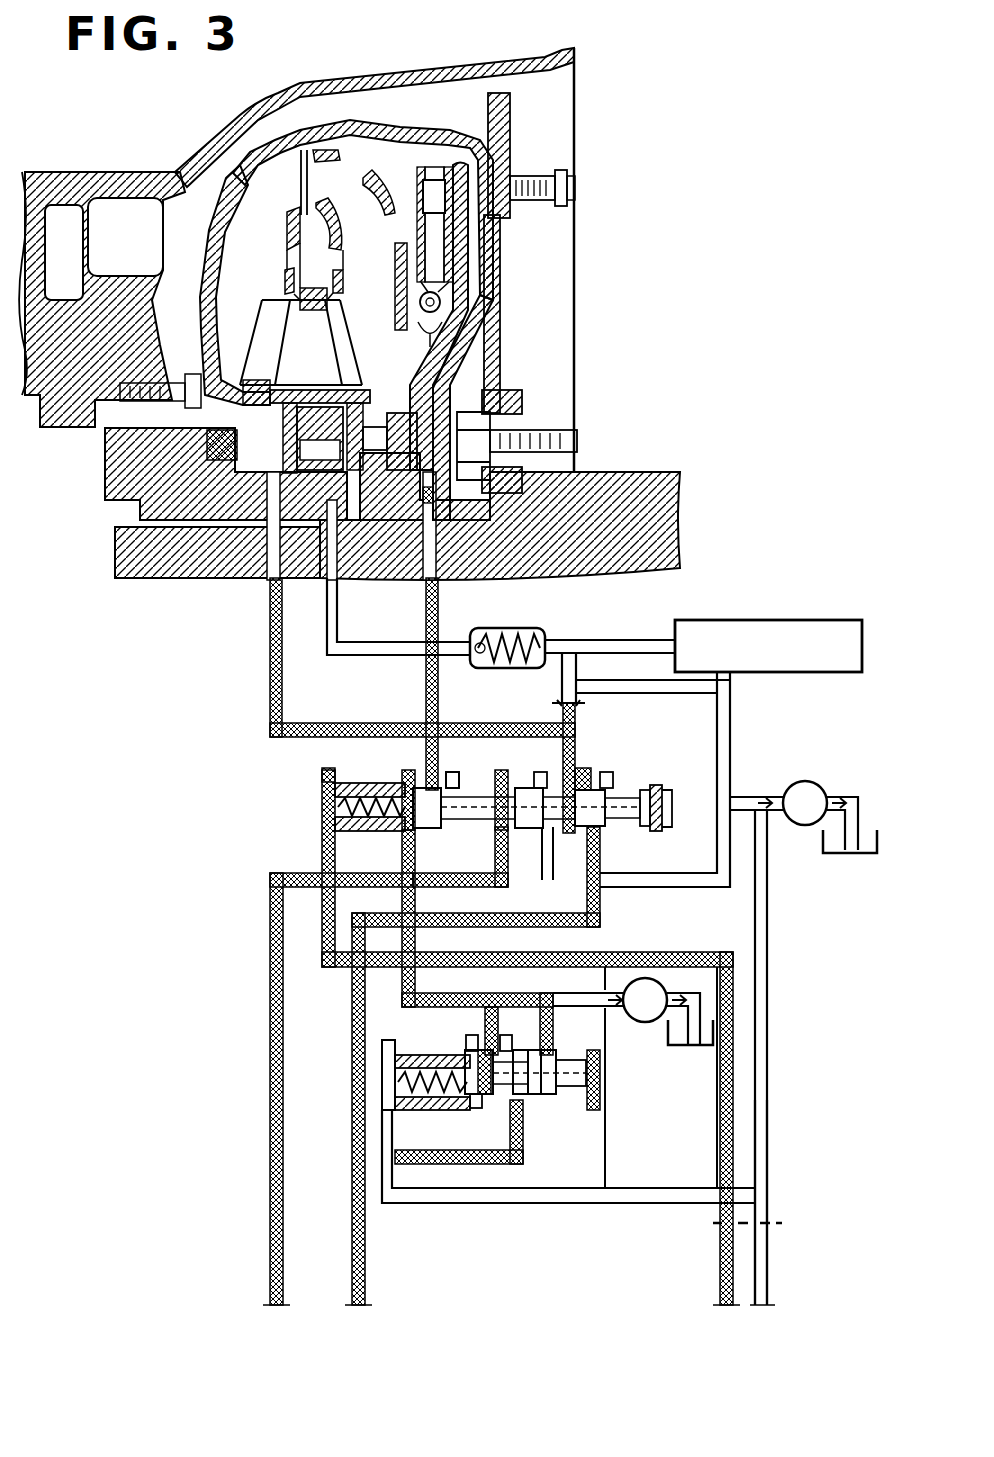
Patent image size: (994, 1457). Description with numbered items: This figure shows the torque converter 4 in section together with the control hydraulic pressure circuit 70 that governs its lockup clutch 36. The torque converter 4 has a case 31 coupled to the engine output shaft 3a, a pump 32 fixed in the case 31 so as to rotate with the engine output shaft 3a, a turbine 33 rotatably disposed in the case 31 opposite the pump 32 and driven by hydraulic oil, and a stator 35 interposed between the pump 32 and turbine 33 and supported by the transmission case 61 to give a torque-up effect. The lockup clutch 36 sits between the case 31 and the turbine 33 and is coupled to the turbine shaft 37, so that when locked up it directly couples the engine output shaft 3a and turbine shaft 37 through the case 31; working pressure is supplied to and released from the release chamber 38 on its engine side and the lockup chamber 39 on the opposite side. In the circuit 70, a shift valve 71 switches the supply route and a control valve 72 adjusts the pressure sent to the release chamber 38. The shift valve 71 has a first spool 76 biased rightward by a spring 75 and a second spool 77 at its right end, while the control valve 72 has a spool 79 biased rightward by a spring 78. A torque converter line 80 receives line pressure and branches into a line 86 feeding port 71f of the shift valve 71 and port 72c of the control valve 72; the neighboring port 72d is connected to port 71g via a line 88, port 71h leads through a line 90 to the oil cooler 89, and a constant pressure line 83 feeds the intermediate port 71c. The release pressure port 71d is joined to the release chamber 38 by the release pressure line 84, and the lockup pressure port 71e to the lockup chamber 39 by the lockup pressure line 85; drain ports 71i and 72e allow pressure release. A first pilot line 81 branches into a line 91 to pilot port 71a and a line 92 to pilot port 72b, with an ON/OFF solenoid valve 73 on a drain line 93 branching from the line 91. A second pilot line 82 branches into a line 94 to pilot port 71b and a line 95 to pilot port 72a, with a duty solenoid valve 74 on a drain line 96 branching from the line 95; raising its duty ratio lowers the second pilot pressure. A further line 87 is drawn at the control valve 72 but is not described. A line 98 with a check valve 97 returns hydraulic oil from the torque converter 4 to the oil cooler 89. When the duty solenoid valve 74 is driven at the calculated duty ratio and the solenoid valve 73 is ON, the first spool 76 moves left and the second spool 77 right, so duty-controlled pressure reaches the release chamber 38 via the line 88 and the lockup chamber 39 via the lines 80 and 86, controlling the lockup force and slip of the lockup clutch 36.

The engine output shaft 3a is at (640, 470).
The torque converter 4 is at (527, 133).
The case 31 is at (240, 140).
The pump 32 is at (245, 228).
The turbine 33 is at (335, 170).
The stator 35 is at (287, 340).
The lockup clutch 36 is at (452, 157).
The turbine shaft 37 is at (128, 535).
The release chamber 38 is at (467, 340).
The lockup chamber 39 is at (400, 150).
The transmission case 61 is at (112, 180).
The control hydraulic pressure circuit 70 is at (245, 1005).
The shift valve 71 is at (316, 812).
The pilot port 71a is at (668, 830).
The pilot port 71b is at (320, 775).
The intermediate port 71c is at (501, 780).
The release pressure port 71d is at (432, 850).
The lockup pressure port 71e is at (572, 840).
The port 71f is at (588, 770).
The port 71g is at (404, 770).
The port 71h is at (560, 740).
The drain port 71i is at (452, 770).
The control valve 72 is at (580, 1118).
The pilot port 72a is at (604, 1105).
The pilot port 72b is at (380, 1048).
The port 72c is at (520, 1118).
The port 72d is at (502, 1050).
The drain port 72e is at (470, 1108).
The ON/OFF solenoid valve 73 is at (808, 780).
The duty solenoid valve 74 is at (664, 988).
The spring 75 is at (375, 783).
The first spool 76 is at (378, 831).
The second spool 77 is at (476, 857).
The spring 78 is at (416, 1054).
The spool 79 is at (552, 1060).
The torque converter line 80 is at (368, 1246).
The first pilot line 81 is at (770, 1252).
The second pilot line 82 is at (720, 1252).
The constant pressure line 83 is at (268, 1244).
The release pressure line 84 is at (440, 628).
The lockup pressure line 85 is at (268, 638).
The line 86 is at (600, 922).
The oil passage 87 is at (522, 1162).
The line 88 is at (440, 998).
The oil cooler 89 is at (772, 620).
The line 90 is at (690, 880).
The line 91 is at (768, 998).
The line 92 is at (576, 1198).
The drain line 93 is at (768, 815).
The line 94 is at (490, 952).
The line 95 is at (598, 998).
The drain line 96 is at (615, 1010).
The check valve 97 is at (520, 630).
The line 98 is at (612, 638).